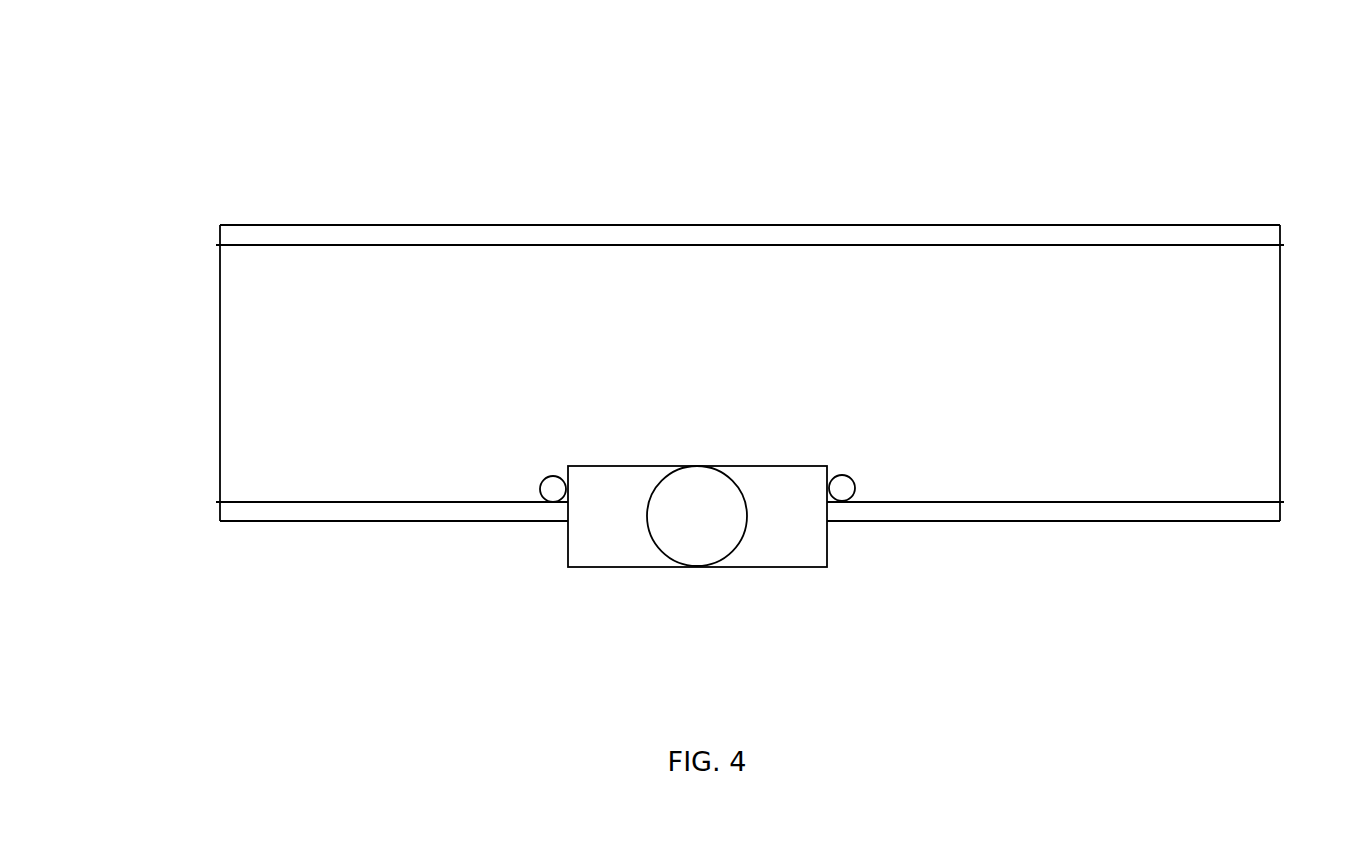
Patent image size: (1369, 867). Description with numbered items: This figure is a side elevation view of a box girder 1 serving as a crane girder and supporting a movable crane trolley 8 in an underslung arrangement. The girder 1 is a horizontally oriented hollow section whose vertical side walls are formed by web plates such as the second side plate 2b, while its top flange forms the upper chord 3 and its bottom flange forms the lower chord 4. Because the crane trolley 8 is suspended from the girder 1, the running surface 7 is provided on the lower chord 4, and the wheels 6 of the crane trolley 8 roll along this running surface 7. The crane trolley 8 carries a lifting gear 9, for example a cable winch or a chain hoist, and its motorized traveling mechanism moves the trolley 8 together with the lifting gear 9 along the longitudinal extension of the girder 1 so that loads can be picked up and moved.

The box girder 1 is at (342, 117).
The second side plate 2b is at (273, 419).
The upper chord 3 is at (565, 225).
The lower chord 4 is at (298, 521).
The wheels 6 is at (542, 497).
The running surface 7 is at (1245, 500).
The crane trolley 8 is at (603, 567).
The lifting gear 9 is at (737, 545).